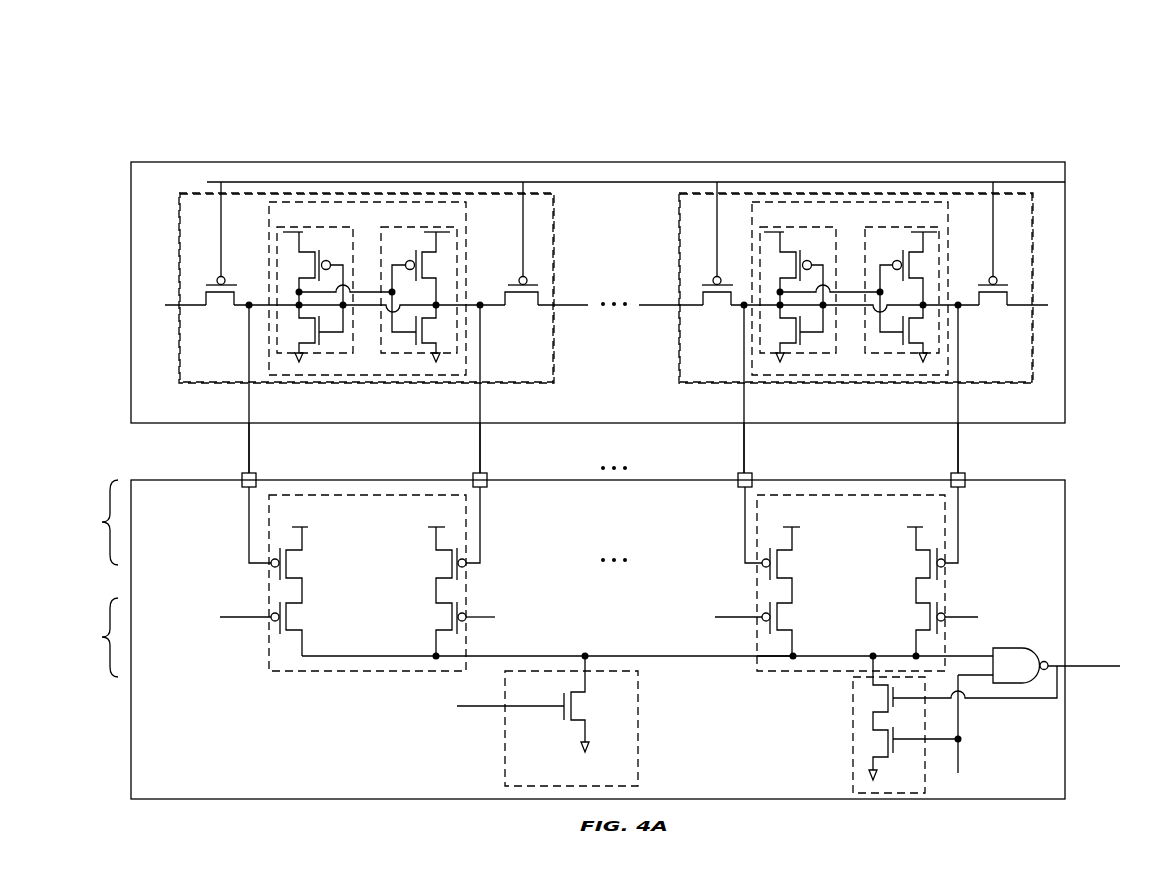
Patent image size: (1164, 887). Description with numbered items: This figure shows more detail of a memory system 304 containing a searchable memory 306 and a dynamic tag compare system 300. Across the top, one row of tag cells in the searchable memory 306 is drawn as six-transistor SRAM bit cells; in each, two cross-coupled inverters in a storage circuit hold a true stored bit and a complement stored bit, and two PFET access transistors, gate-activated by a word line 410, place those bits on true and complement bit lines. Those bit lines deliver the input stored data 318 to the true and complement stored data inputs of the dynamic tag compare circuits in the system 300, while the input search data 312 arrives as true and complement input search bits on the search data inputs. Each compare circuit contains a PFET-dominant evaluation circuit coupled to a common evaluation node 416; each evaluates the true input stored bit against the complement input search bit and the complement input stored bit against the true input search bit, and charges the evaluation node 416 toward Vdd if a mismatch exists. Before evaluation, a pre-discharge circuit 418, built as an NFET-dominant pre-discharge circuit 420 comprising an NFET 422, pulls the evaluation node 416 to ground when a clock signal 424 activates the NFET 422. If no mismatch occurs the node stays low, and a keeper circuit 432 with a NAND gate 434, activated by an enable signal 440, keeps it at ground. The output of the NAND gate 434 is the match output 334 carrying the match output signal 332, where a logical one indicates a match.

The memory system 304 is at (919, 92).
The searchable memory 306 is at (604, 399).
The word line 410 is at (604, 182).
The input stored data 318 is at (72, 522).
The input search data 312 is at (72, 637).
The evaluation node 416 is at (713, 647).
The dynamic tag compare system 300 is at (598, 639).
The pre-discharge circuit 418 is at (505, 753).
The NFET-dominant pre-discharge circuit 420 is at (542, 782).
The NFET 422 is at (571, 730).
The clock signal 424 is at (495, 702).
The keeper circuit 432 is at (852, 779).
The NAND gate 434 is at (1025, 674).
The match output signal 332 is at (1108, 662).
The match output 334 is at (1081, 669).
The enable signal 440 is at (965, 757).